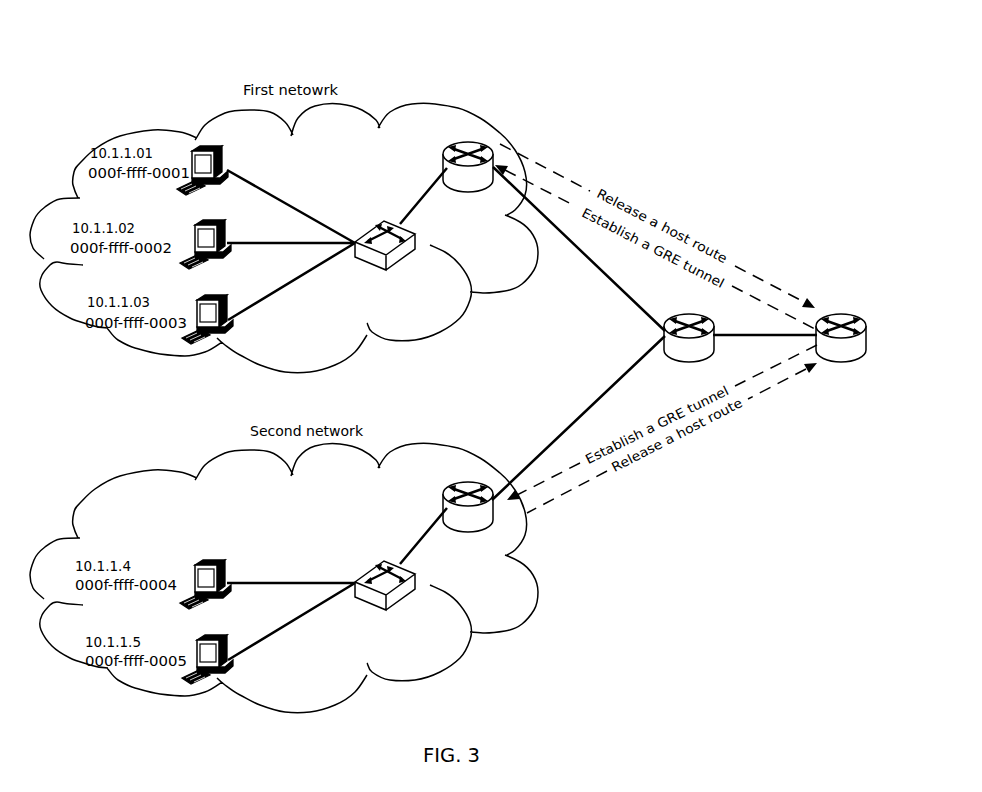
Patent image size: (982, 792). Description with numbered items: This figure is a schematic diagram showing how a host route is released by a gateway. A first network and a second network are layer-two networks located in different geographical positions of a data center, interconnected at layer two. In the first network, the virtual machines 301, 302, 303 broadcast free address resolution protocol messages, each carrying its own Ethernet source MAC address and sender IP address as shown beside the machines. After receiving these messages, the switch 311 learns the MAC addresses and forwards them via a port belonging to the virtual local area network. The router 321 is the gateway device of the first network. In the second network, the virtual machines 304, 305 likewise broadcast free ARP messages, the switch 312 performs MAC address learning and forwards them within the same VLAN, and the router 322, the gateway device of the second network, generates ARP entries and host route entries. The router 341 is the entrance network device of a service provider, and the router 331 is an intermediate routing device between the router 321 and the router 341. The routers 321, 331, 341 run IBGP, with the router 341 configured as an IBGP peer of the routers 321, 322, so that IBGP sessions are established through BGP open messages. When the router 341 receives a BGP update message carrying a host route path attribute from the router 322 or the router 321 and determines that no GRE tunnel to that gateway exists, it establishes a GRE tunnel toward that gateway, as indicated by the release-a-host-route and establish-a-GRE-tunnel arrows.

The virtual machine 301 is at (218, 157).
The virtual machine 302 is at (218, 232).
The virtual machine 303 is at (224, 296).
The virtual machine 304 is at (218, 573).
The virtual machine 305 is at (223, 638).
The switch 311 is at (384, 219).
The switch 312 is at (388, 561).
The router 321 is at (487, 141).
The router 322 is at (460, 482).
The router 331 is at (686, 312).
The router 341 is at (846, 312).